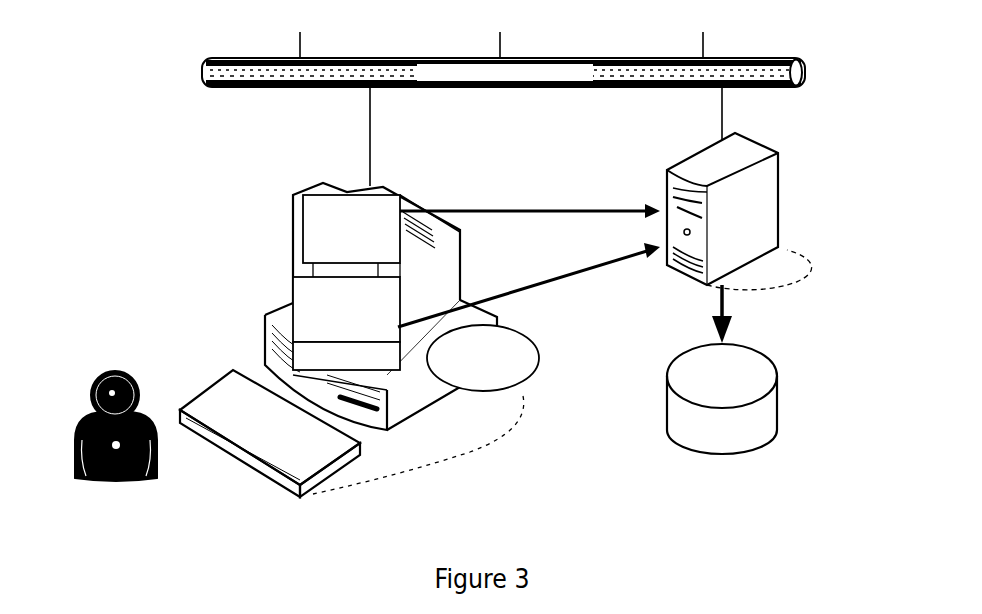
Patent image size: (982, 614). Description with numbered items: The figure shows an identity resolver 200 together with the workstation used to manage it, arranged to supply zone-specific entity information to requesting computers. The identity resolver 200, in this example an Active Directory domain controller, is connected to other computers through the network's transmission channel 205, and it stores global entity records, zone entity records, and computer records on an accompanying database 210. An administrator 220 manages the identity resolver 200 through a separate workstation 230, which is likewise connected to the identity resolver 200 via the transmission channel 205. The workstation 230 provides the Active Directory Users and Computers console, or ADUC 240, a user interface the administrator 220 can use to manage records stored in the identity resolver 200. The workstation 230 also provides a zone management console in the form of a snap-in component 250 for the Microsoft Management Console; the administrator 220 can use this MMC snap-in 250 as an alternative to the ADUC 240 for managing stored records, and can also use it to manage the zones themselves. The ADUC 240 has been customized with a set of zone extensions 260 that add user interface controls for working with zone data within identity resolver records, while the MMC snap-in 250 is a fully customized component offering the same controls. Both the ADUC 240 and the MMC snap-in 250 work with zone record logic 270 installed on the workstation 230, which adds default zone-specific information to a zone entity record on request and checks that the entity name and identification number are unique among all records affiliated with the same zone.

The identity resolver 200 is at (763, 193).
The transmission channel 205 is at (629, 75).
The database 210 is at (762, 420).
The administrator 220 is at (88, 418).
The workstation 230 is at (433, 400).
The Active Directory Users and Computers console (ADUC) 240 is at (320, 297).
The MMC snap-in component 250 is at (318, 226).
The zone extensions 260 is at (395, 352).
The zone record logic 270 is at (539, 352).